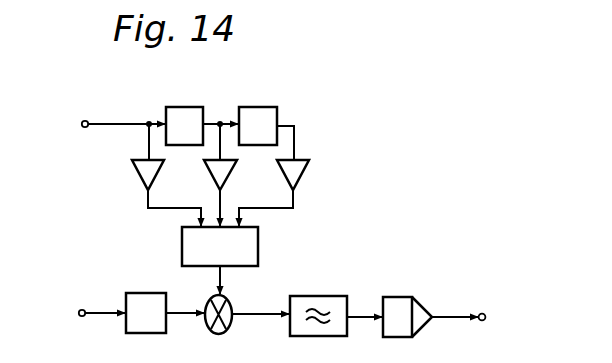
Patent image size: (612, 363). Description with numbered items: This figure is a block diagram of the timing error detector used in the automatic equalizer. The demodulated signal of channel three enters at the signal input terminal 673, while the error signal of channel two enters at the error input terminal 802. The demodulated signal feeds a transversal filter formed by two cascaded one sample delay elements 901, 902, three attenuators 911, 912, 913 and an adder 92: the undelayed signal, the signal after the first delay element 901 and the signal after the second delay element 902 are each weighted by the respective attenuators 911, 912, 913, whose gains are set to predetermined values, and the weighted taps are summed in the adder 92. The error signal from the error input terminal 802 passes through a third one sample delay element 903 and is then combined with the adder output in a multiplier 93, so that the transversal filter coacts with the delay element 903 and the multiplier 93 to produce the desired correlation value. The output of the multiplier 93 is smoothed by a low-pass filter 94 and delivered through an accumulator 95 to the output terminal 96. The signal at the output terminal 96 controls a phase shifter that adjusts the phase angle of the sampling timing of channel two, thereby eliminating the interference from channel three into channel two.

The signal input terminal 673 is at (80, 122).
The error input terminal 802 is at (78, 312).
The one sample delay element 901 is at (188, 107).
The one sample delay element 902 is at (260, 107).
The one sample delay element 903 is at (131, 293).
The attenuator 911 is at (140, 176).
The attenuator 912 is at (213, 175).
The attenuator 913 is at (287, 180).
The adder 92 is at (258, 250).
The multiplier 93 is at (229, 303).
The low-pass filter 94 is at (329, 296).
The accumulator 95 is at (393, 296).
The output terminal 96 is at (483, 313).